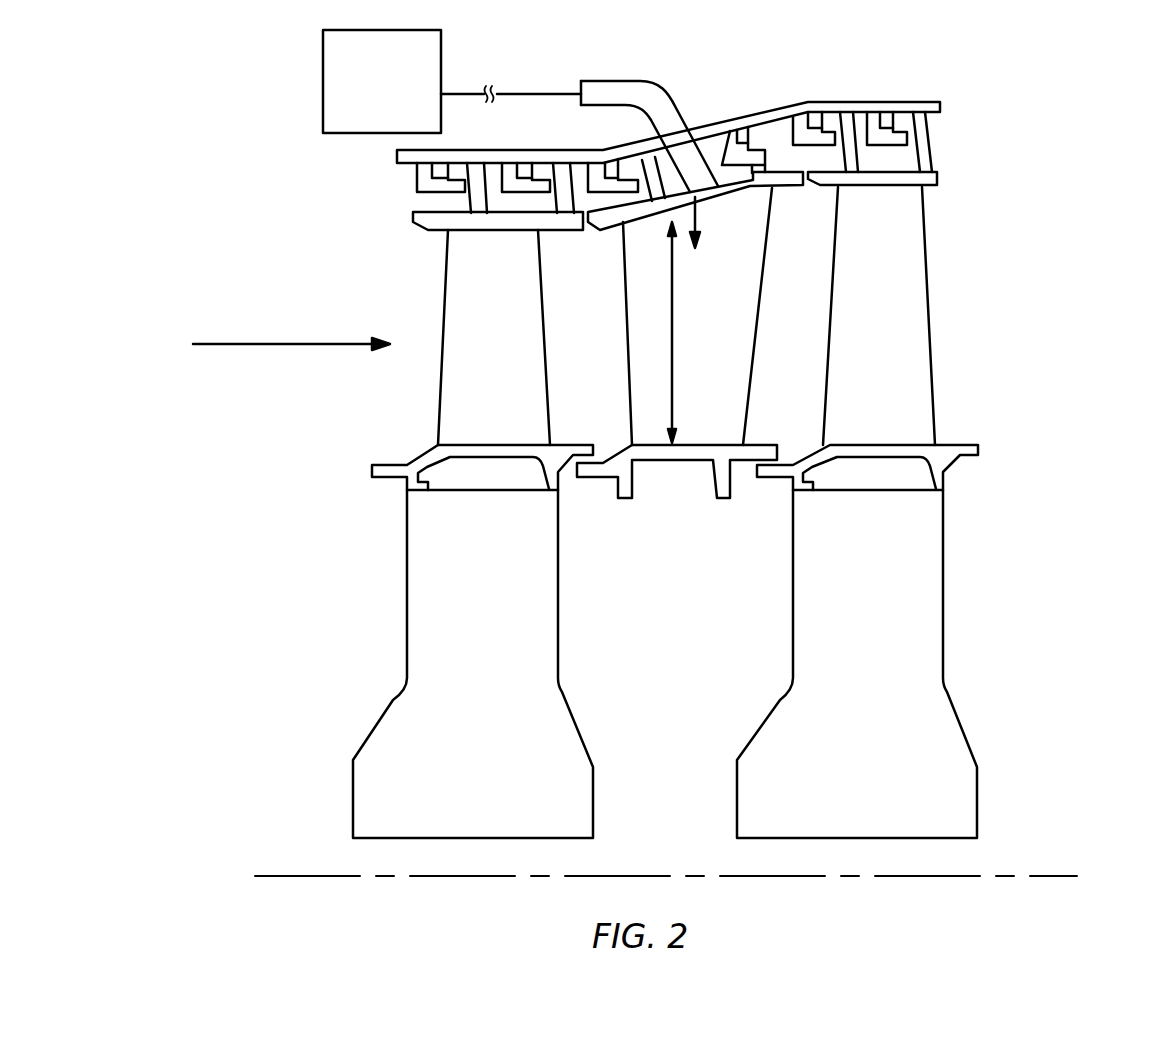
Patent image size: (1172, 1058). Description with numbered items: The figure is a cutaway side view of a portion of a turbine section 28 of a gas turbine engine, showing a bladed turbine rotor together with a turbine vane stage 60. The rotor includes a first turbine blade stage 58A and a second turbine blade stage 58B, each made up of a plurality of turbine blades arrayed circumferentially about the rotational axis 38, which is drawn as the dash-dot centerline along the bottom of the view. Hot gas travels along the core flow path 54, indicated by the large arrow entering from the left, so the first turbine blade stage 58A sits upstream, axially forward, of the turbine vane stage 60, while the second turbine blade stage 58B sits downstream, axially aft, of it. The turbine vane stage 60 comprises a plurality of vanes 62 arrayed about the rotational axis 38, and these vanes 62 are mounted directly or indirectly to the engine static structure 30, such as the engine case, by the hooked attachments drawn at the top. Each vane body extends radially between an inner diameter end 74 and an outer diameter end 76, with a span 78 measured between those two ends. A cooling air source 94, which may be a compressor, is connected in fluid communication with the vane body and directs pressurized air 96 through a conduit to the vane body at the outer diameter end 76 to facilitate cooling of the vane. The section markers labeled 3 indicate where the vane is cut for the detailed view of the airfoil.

The turbine section 28 is at (997, 242).
The engine static structure 30 is at (919, 101).
The rotational axis 38 is at (1018, 876).
The core flow path 54 is at (282, 346).
The first turbine blade stage 58A is at (345, 570).
The second turbine blade stage 58B is at (990, 560).
The turbine vane stage 60 is at (675, 278).
The vane 62 is at (725, 377).
The inner diameter end 74 is at (687, 446).
The outer diameter end 76 is at (713, 195).
The span 78 is at (673, 347).
The cooling air source 94 is at (397, 117).
The pressurized air 96 is at (463, 93).
The section line for FIG. 3 is at (694, 311).